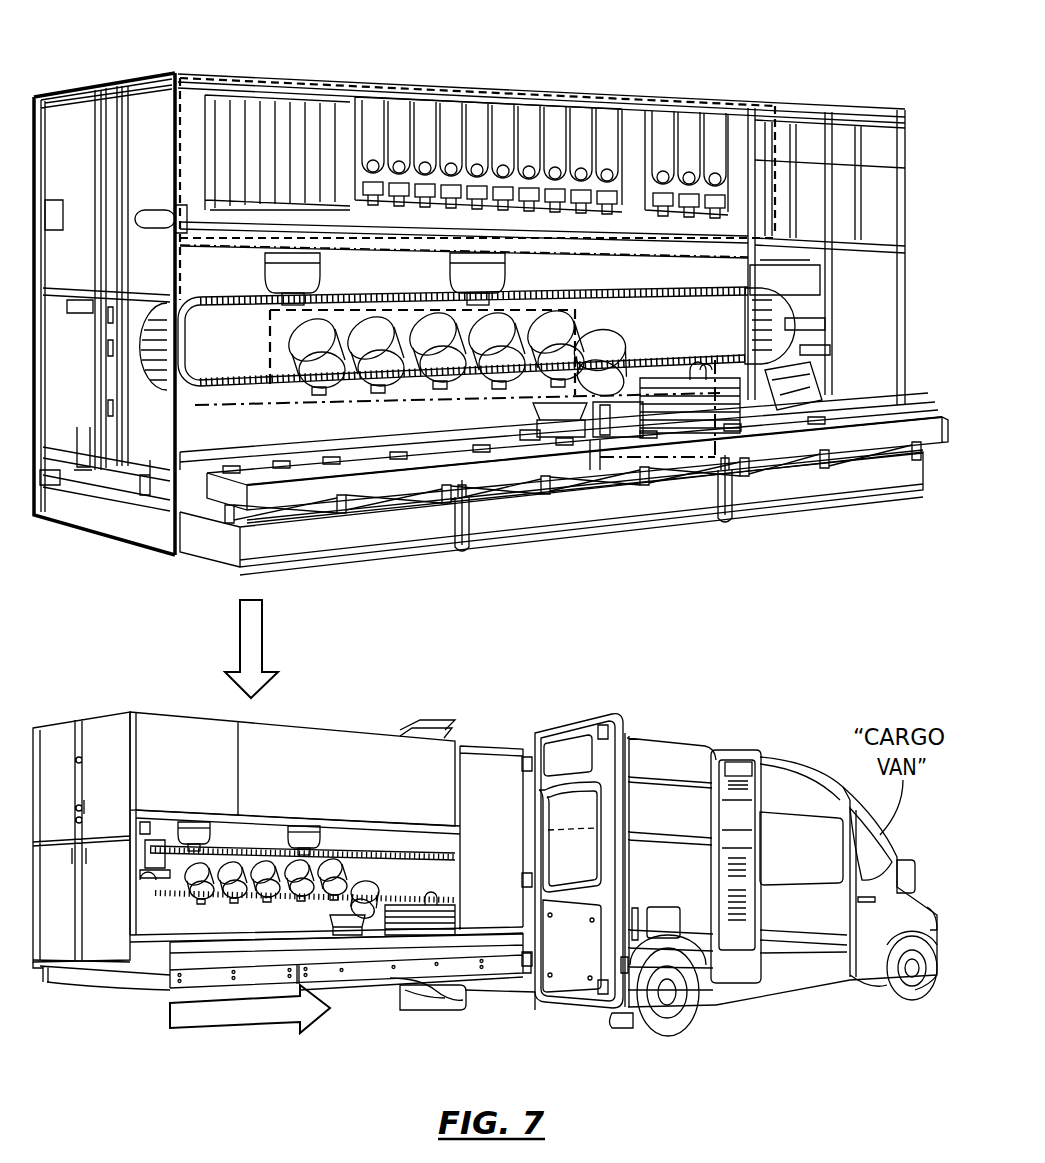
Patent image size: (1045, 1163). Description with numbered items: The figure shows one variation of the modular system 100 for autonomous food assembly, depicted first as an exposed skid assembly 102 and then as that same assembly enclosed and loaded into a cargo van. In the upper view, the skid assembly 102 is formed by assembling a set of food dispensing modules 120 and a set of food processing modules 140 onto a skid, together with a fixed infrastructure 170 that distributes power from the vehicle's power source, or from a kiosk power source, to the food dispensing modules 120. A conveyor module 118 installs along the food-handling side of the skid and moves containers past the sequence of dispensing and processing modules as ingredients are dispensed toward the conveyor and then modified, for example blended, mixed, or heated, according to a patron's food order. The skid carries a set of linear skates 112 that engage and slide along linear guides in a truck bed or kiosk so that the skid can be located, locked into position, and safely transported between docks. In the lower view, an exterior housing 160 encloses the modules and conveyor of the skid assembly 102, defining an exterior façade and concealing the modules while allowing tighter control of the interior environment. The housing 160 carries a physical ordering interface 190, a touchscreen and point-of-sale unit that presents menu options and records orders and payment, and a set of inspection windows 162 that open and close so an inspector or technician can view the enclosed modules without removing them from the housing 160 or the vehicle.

The modular system 100 is at (98, 40).
The fixed infrastructure 170 is at (128, 120).
The food dispensing modules 120 is at (595, 94).
The skid assembly 102 is at (193, 565).
The conveyor module 118 is at (520, 385).
The food processing modules 140 is at (815, 378).
The exterior housing 160 is at (332, 750).
The physical ordering interface 190 is at (741, 755).
The inspection windows 162 is at (665, 920).
The skates 112 is at (98, 980).